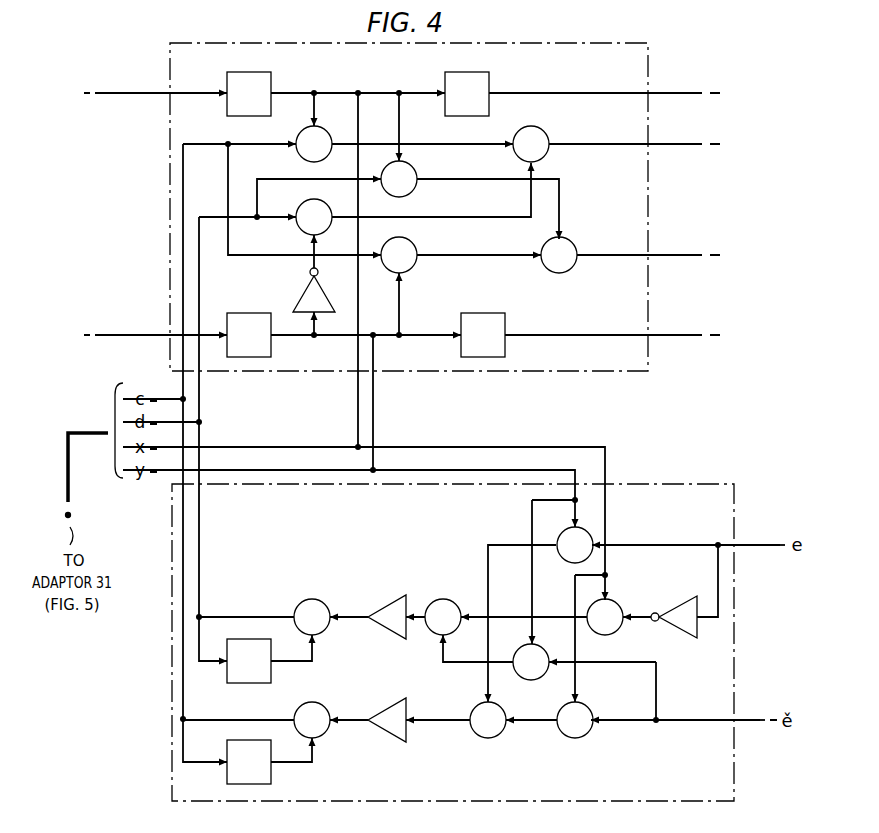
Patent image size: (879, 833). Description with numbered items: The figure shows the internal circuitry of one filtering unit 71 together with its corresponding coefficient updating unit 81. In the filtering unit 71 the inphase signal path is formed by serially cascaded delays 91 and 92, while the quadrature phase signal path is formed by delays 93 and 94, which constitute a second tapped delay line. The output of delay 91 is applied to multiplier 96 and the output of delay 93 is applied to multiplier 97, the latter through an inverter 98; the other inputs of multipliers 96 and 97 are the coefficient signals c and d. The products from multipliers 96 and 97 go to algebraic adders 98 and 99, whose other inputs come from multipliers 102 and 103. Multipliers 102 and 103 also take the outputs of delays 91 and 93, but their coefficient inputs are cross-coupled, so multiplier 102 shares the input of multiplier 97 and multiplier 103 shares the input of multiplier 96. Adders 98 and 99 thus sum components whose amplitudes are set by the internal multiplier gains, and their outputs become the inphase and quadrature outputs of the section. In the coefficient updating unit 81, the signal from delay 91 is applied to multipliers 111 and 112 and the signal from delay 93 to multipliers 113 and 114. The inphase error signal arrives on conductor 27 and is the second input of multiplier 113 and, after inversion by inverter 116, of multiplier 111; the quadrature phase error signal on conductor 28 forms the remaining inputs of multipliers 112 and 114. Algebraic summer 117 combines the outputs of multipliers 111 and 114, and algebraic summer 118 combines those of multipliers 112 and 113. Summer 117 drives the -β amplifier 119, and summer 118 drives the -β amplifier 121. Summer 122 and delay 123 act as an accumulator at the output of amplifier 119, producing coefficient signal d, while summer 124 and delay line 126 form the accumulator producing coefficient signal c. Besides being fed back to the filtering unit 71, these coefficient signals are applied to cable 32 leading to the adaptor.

The filtering unit 71 is at (409, 207).
The coefficient updating unit 81 is at (453, 642).
The delay 91 is at (272, 78).
The delay 92 is at (490, 80).
The delay 93 is at (245, 313).
The delay 94 is at (474, 314).
The multiplier 96 is at (326, 131).
The multiplier 97 is at (326, 204).
The algebraic adder 98 is at (545, 133).
The algebraic adder 99 is at (572, 244).
The multiplier 102 is at (413, 167).
The multiplier 103 is at (413, 243).
The cable 32 is at (70, 500).
The conductor 27 is at (765, 545).
The conductor 28 is at (735, 720).
The multiplier 111 is at (618, 605).
The multiplier 112 is at (588, 706).
The multiplier 113 is at (562, 528).
The multiplier 114 is at (543, 650).
The inverter 116 is at (680, 640).
The algebraic summer 117 is at (440, 599).
The algebraic summer 118 is at (475, 704).
The -β amplifier 119 is at (398, 596).
The -β amplifier 121 is at (384, 742).
The summer 122 is at (309, 580).
The delay 123 is at (271, 675).
The summer 124 is at (325, 703).
The delay line 126 is at (271, 778).